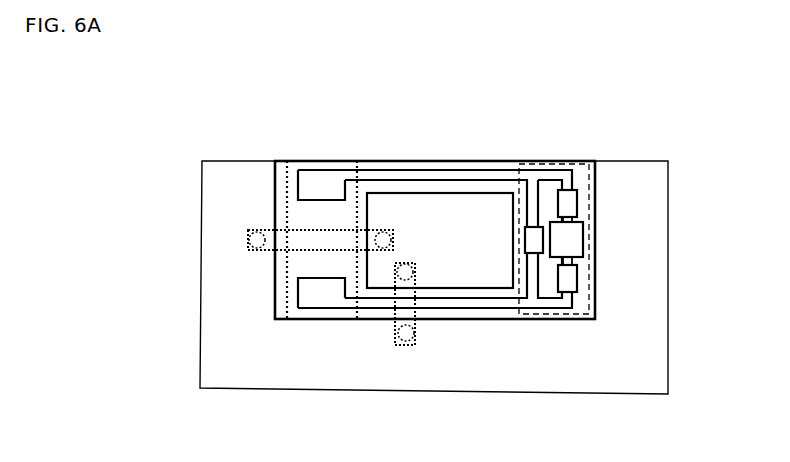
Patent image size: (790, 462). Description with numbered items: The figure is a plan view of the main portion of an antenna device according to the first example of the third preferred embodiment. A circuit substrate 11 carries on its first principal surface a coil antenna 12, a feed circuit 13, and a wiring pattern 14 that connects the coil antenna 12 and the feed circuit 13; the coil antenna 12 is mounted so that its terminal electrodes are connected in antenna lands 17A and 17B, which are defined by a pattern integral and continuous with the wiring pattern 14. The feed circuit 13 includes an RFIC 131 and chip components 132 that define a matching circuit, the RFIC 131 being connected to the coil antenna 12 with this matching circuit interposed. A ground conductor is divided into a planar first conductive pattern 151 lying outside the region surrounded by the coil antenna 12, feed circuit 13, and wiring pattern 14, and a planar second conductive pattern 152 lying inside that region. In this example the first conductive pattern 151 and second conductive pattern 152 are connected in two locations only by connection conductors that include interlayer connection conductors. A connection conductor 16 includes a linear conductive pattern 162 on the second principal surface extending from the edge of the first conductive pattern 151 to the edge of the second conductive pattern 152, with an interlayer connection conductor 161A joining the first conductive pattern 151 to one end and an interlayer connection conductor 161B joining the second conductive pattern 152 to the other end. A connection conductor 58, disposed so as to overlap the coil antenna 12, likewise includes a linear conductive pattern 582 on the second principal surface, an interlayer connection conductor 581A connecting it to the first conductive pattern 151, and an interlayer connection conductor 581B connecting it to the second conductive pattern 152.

The first conductive pattern 151 is at (242, 182).
The second conductive pattern 152 is at (437, 210).
The circuit substrate 11 is at (281, 161).
The coil antenna 12 is at (358, 165).
The feed circuit 13 is at (623, 219).
The RFIC 131 is at (567, 240).
The chip components 132 is at (567, 203).
The wiring pattern 14 is at (435, 277).
The antenna land 17A is at (322, 184).
The antenna land 17B is at (325, 300).
The connection conductor 58 is at (265, 252).
The interlayer connection conductor 581A is at (247, 240).
The interlayer connection conductor 581B is at (375, 248).
The linear conductive pattern 582 is at (267, 228).
The connection conductor 16 is at (428, 352).
The interlayer connection conductor 161A is at (409, 338).
The interlayer connection conductor 161B is at (405, 272).
The linear conductive pattern 162 is at (396, 328).